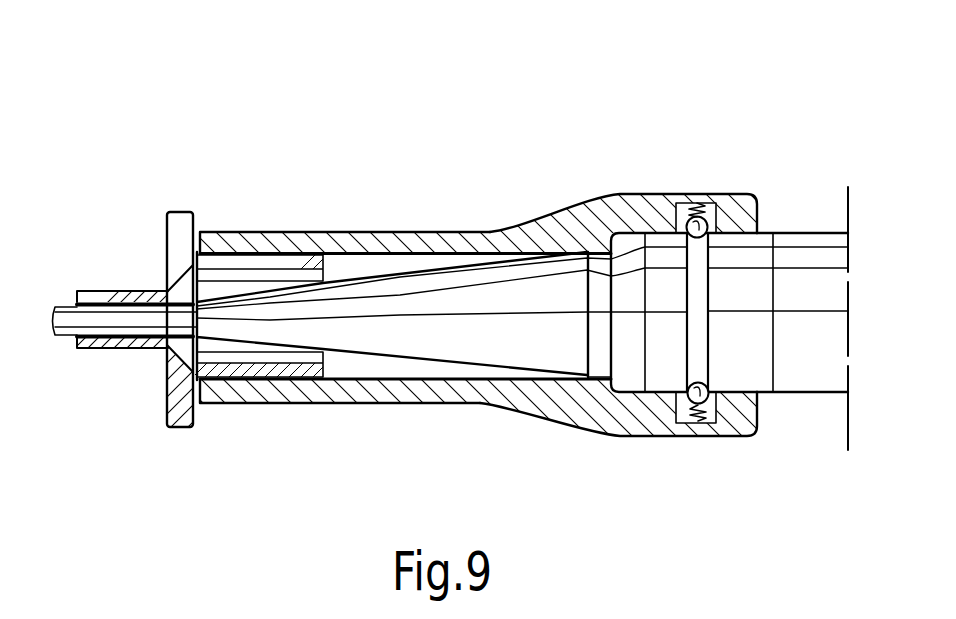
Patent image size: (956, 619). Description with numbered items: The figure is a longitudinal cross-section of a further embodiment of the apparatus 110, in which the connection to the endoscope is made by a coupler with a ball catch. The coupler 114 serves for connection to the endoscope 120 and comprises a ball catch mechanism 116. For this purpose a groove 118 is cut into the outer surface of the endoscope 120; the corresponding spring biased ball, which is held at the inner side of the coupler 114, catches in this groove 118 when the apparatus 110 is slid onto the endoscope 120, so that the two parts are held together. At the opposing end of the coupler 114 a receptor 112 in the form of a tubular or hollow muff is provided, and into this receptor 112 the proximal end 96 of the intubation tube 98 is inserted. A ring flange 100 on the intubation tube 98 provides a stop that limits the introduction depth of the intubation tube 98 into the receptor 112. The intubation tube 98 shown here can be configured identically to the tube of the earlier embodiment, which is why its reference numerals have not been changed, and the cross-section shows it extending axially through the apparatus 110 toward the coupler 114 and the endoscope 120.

The proximal end 96 is at (273, 370).
The intubation tube 98 is at (98, 345).
The ring flange 100 is at (163, 240).
The apparatus 110 is at (449, 213).
The receptor 112 is at (270, 240).
The coupler 114 is at (643, 213).
The ball catch mechanism 116 is at (717, 210).
The groove 118 is at (700, 317).
The endoscope 120 is at (792, 217).